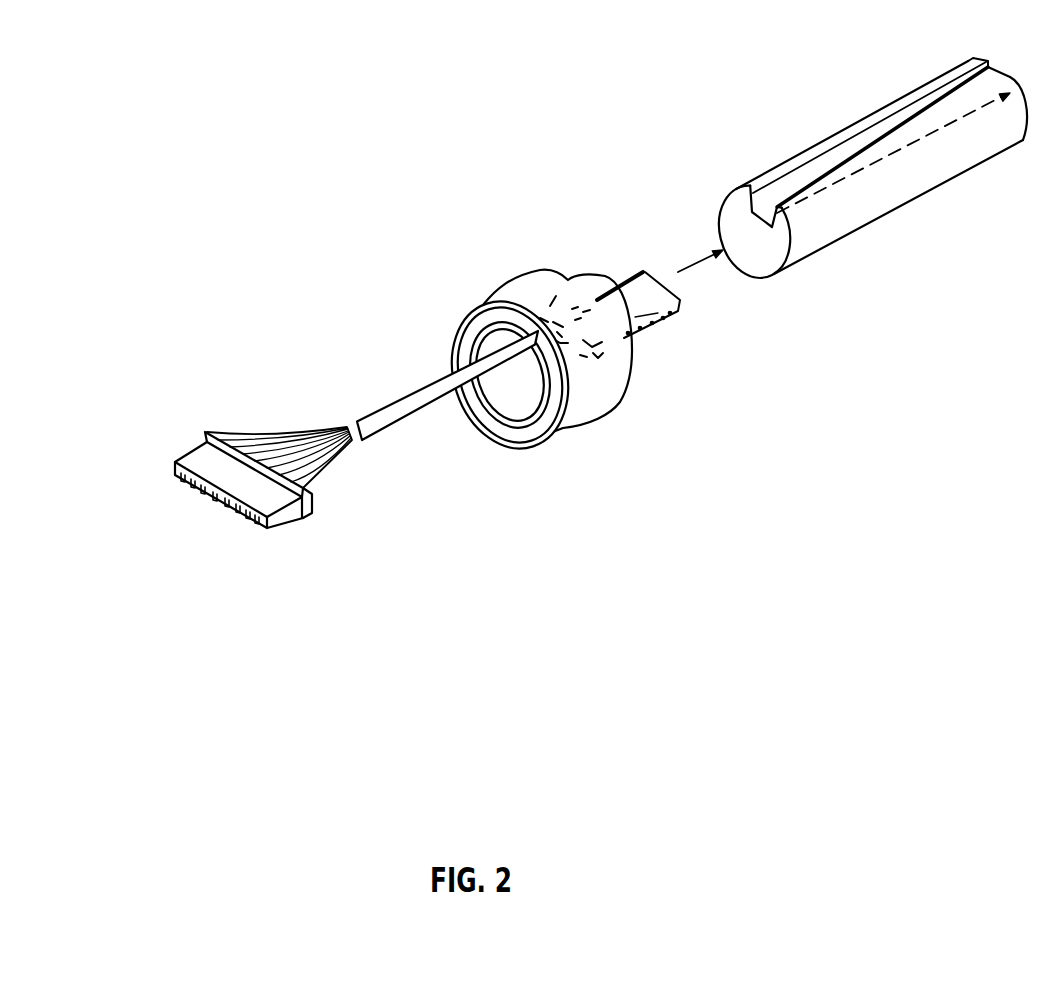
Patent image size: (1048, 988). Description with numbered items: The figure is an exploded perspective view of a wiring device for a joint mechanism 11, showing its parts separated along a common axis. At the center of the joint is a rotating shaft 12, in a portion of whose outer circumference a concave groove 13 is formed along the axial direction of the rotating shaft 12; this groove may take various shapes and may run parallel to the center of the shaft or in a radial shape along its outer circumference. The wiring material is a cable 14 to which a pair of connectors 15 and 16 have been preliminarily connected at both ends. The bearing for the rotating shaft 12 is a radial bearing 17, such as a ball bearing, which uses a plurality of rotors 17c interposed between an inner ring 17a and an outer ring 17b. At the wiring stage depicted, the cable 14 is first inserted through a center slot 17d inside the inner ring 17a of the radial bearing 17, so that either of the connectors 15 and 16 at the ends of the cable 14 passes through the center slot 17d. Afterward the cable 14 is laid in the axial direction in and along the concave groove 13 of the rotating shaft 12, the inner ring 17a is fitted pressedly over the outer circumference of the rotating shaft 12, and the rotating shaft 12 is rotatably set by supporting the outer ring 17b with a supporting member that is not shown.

The joint mechanism 11 is at (622, 180).
The rotating shaft 12 is at (900, 193).
The concave groove 13 is at (847, 147).
The cable 14 is at (432, 390).
The connector 15 is at (672, 313).
The connector 16 is at (227, 480).
The radial bearing 17 is at (725, 515).
The inner ring 17a is at (530, 424).
The outer ring 17b is at (596, 400).
The rotors 17c is at (553, 408).
The center slot 17d is at (517, 395).